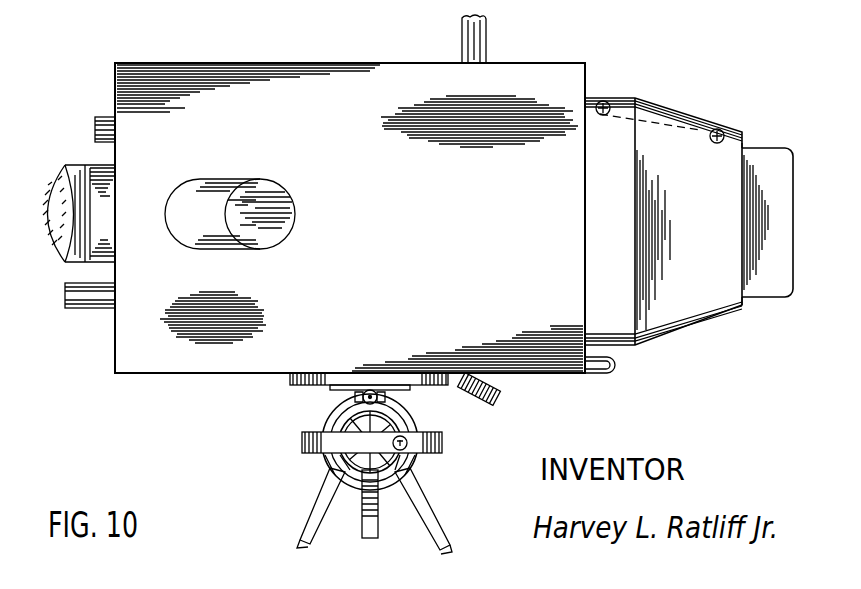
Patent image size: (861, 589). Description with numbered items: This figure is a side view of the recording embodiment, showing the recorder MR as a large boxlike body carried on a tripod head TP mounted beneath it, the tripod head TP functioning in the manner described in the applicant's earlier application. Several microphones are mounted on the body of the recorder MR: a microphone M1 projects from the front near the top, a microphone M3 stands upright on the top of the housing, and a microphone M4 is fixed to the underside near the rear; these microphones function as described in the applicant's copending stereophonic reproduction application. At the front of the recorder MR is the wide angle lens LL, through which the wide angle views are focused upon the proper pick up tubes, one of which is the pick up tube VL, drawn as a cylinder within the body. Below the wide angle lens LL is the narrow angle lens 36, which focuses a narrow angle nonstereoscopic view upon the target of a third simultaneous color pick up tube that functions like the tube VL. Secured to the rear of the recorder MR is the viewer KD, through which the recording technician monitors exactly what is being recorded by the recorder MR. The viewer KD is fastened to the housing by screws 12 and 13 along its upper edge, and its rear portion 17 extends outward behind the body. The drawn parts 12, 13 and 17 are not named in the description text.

The recorder MR is at (196, 28).
The microphone M3 is at (487, 22).
The microphone M1 is at (97, 117).
The wide angle lens LL is at (57, 168).
The pick up tube VL is at (233, 180).
The narrow angle lens 36 is at (85, 308).
The viewer KD is at (660, 91).
The screw 12 is at (604, 101).
The screw 13 is at (718, 129).
The housing section 17 is at (762, 147).
The tripod head TP is at (288, 434).
The microphone M4 is at (497, 396).